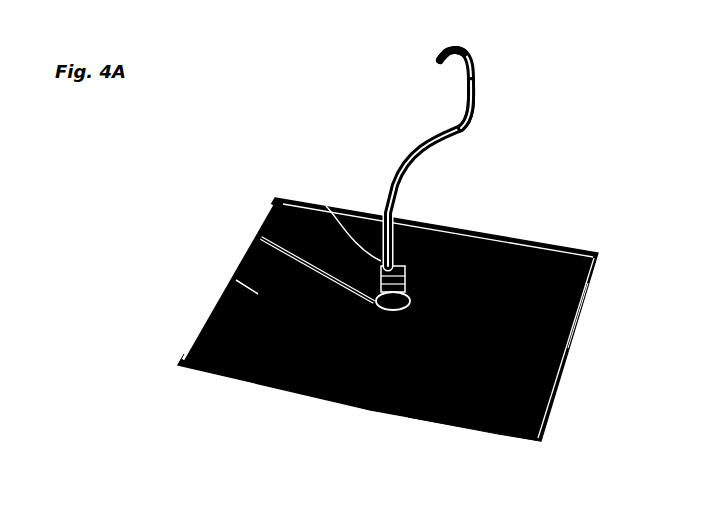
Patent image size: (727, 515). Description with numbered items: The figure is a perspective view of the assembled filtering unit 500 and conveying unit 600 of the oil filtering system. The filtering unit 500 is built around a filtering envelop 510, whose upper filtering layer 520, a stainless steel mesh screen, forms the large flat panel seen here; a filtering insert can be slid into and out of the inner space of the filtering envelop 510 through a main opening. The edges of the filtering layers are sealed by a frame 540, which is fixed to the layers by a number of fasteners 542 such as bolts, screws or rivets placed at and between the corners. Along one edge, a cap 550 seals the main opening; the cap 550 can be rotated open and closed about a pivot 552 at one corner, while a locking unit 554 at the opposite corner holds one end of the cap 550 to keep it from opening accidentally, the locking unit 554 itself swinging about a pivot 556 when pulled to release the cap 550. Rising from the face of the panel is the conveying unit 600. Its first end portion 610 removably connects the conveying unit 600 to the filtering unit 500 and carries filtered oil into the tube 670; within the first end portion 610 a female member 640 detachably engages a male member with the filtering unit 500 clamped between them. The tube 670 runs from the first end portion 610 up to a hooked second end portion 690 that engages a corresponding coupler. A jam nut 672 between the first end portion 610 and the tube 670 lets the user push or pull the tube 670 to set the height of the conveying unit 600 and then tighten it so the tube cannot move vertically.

The filtering unit 500 is at (528, 226).
The filtering envelop 510 is at (156, 356).
The upper filtering layer 520 is at (222, 266).
The frame 540 is at (323, 383).
The fasteners 542 is at (263, 373).
The cap 550 is at (570, 313).
The pivot 552 is at (588, 245).
The locking unit 554 is at (512, 432).
The pivot 556 is at (487, 420).
The conveying unit 600 is at (478, 80).
The first end portion 610 is at (237, 220).
The female member 640 is at (230, 239).
The tube 670 is at (433, 148).
The jam nut 672 is at (318, 198).
The second end portion 690 is at (432, 52).